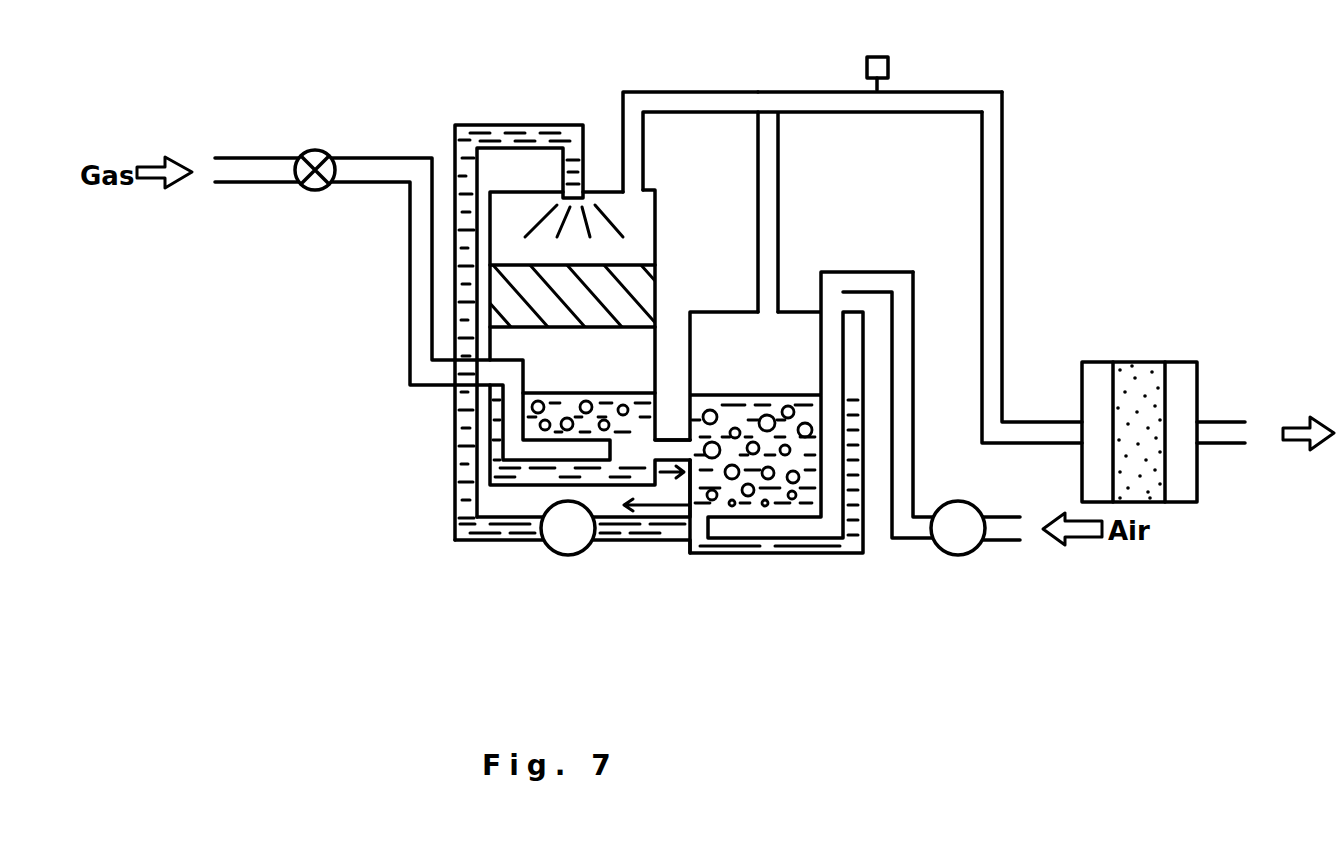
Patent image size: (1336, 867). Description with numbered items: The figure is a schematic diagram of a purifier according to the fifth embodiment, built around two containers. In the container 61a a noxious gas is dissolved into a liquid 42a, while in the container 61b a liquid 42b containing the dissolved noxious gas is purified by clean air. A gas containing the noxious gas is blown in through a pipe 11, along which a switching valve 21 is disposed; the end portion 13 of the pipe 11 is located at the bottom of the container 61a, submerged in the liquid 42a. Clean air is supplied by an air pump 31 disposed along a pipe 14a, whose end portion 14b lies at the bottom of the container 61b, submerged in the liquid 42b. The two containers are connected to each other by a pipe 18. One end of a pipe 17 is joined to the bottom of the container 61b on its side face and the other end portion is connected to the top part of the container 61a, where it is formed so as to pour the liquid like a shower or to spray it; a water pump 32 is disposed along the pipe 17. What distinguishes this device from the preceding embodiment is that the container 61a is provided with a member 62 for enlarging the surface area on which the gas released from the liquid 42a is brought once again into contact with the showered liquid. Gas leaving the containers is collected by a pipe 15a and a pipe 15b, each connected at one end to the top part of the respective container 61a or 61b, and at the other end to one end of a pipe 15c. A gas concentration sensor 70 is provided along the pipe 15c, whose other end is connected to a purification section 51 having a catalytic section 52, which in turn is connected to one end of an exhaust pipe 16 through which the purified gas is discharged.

The pipe 11 is at (258, 158).
The switching valve 21 is at (323, 152).
The end portion 13 is at (540, 452).
The container 61a is at (655, 233).
The member for enlarging a surface area 62 is at (617, 310).
The liquid 42a is at (560, 403).
The pipe 18 is at (673, 437).
The pipe 15a is at (738, 90).
The pipe 15b is at (780, 192).
The gas concentration sensor 70 is at (890, 63).
The pipe 15c is at (993, 90).
The container 61b is at (798, 312).
The liquid 42b is at (742, 425).
The end portion 14b is at (790, 528).
The pipe 17 is at (663, 542).
The water pump 32 is at (578, 553).
The air pump 31 is at (960, 555).
The pipe 14a is at (1007, 517).
The purification section 51 is at (1105, 362).
The catalytic section 52 is at (1133, 373).
The exhaust pipe 16 is at (1227, 420).